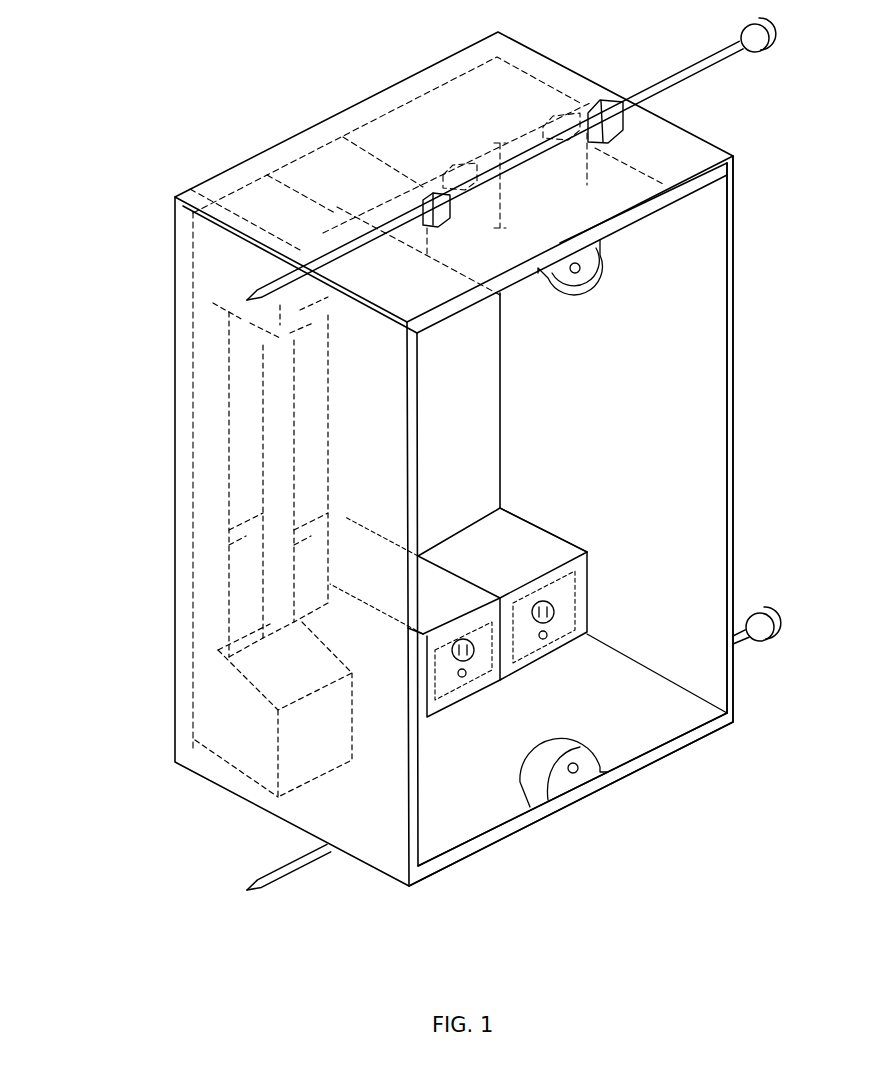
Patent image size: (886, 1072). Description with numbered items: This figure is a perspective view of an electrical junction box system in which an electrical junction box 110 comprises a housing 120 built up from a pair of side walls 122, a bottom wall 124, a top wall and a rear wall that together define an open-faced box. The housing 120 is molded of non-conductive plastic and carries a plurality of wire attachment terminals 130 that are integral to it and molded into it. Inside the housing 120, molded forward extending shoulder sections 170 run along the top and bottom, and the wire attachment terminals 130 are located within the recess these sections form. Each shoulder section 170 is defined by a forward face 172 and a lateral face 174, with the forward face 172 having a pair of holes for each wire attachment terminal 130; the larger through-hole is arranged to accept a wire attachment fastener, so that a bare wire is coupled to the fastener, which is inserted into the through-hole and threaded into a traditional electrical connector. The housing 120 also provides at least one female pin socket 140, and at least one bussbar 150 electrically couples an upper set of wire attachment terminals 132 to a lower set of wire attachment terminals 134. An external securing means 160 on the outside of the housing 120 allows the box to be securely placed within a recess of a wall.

The electrical junction box 110 is at (738, 165).
The housing 120 is at (738, 365).
The side walls 122 is at (656, 305).
The bottom wall 124 is at (657, 762).
The wire attachment terminals 130 is at (499, 616).
The upper set of wire attachment terminals 132 is at (298, 190).
The lower set of wire attachment terminals 134 is at (463, 656).
The female pin socket 140 is at (546, 643).
The bussbar 150 is at (242, 424).
The external securing means 160 is at (642, 93).
The molded shoulder sections 170 is at (242, 743).
The forward face 172 is at (393, 700).
The lateral face 174 is at (506, 538).